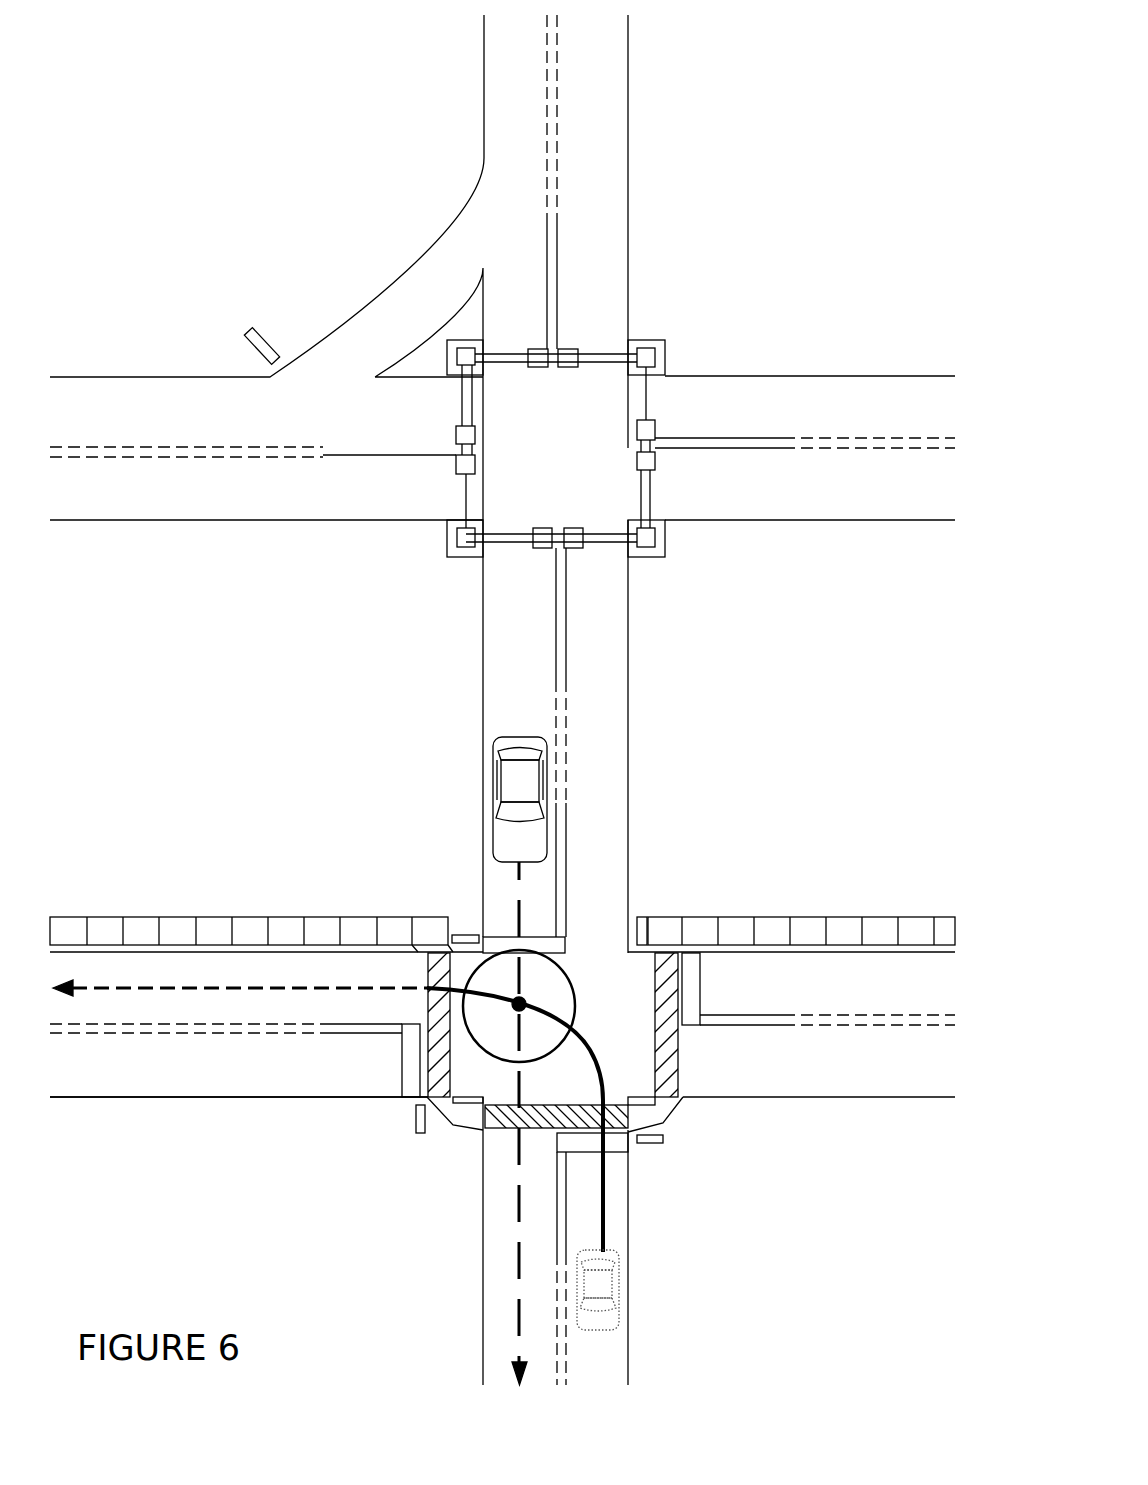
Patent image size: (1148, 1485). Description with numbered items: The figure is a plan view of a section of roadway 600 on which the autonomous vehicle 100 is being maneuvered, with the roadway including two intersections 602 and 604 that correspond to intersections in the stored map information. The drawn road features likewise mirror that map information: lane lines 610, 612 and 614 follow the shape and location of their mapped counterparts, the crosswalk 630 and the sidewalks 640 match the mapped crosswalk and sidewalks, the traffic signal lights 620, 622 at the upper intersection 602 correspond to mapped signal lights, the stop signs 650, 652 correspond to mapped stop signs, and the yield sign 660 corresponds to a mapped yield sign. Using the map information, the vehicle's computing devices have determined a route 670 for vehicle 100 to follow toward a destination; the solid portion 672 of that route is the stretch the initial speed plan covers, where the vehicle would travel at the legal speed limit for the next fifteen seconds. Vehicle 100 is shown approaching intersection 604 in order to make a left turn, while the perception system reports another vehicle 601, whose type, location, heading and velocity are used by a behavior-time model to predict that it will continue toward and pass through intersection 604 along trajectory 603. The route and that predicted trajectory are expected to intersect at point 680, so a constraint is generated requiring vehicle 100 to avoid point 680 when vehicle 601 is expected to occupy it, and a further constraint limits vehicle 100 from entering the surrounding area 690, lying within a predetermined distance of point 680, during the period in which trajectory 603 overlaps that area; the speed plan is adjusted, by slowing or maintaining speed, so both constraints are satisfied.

The vehicle 100 is at (618, 1298).
The section of roadway 600 is at (502, 700).
The vehicle 601 is at (498, 805).
The intersection 602 is at (494, 638).
The trajectory 603 is at (520, 1302).
The intersection 604 is at (553, 1030).
The lane line 610 is at (137, 1034).
The lane line 612 is at (207, 1097).
The lane line 614 is at (557, 123).
The traffic signal light 620 is at (457, 465).
The traffic signal light 622 is at (457, 432).
The crosswalk 630 is at (483, 1113).
The sidewalks 640 is at (727, 917).
The stop sign 650 is at (465, 935).
The stop sign 652 is at (663, 1140).
The yield sign 660 is at (245, 338).
The route 670 is at (267, 988).
The portion of route 672 is at (603, 1205).
The point 680 is at (520, 1005).
The area 690 is at (558, 952).